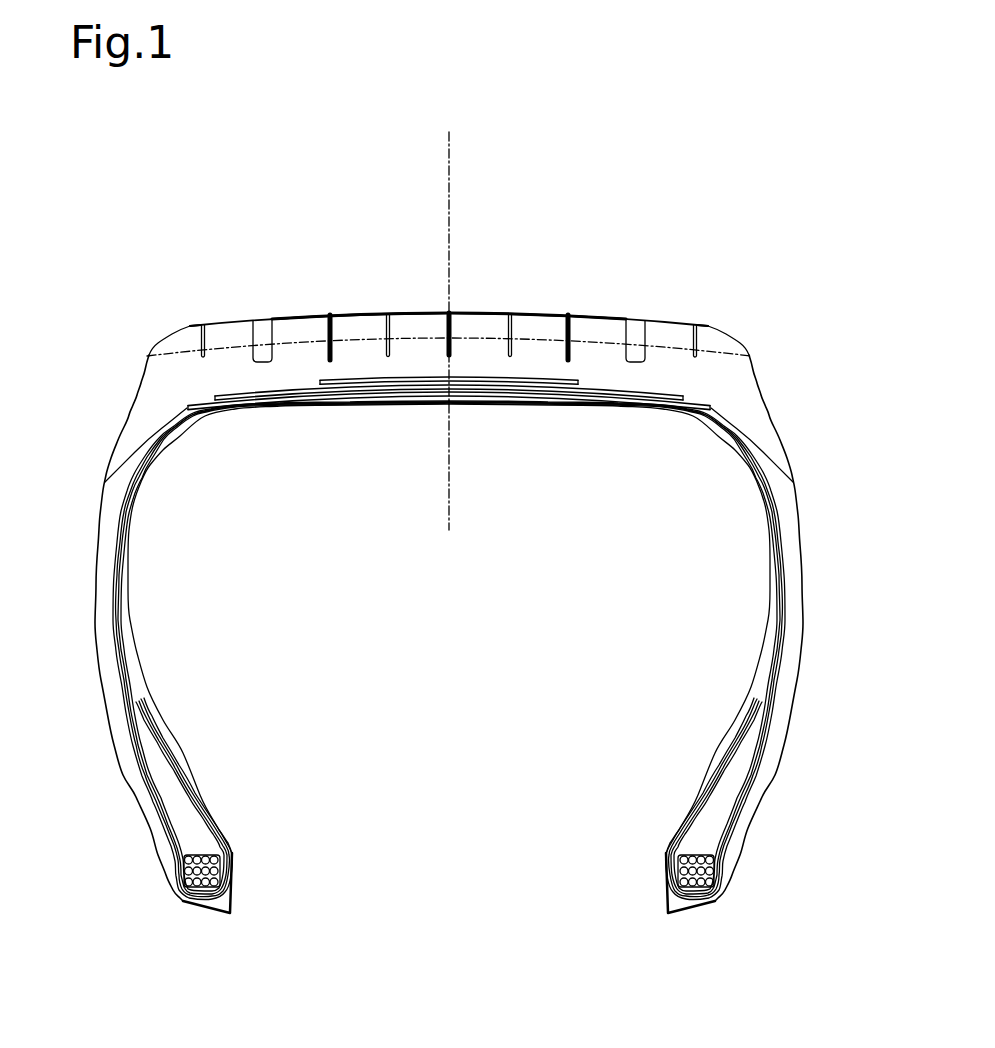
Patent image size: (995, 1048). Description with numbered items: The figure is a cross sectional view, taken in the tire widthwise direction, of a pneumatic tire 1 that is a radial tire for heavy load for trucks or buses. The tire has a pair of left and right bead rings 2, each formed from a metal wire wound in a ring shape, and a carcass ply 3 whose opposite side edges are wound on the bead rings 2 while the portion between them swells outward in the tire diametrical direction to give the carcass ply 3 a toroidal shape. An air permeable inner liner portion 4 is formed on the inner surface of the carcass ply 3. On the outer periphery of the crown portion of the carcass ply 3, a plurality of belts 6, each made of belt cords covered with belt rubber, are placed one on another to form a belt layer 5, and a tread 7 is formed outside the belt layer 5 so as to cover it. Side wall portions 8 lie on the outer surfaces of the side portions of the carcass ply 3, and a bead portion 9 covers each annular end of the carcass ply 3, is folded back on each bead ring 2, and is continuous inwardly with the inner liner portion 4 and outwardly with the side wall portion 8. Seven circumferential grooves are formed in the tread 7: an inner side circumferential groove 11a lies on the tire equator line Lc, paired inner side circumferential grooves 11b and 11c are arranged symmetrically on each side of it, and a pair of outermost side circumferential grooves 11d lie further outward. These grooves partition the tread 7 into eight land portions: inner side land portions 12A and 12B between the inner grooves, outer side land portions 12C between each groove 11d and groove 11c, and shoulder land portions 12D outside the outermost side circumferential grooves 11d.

The pneumatic tire 1 is at (422, 167).
The bead ring 2 is at (232, 867).
The carcass ply 3 is at (475, 403).
The inner liner portion 4 is at (140, 503).
The belt layer 5 is at (327, 477).
The belt 6 is at (338, 397).
The tread 7 is at (467, 313).
The side wall portion 8 is at (94, 615).
The bead portion 9 is at (210, 906).
The inner side circumferential groove 11a is at (445, 313).
The inner side circumferential groove 11b is at (388, 312).
The inner side circumferential groove 11c is at (330, 313).
The outermost side circumferential groove 11d is at (260, 321).
The inner side land portion 12A is at (417, 313).
The inner side land portion 12B is at (360, 317).
The outer side land portion 12C is at (297, 318).
The shoulder land portion 12D is at (223, 318).
The tire equator line Lc is at (448, 320).